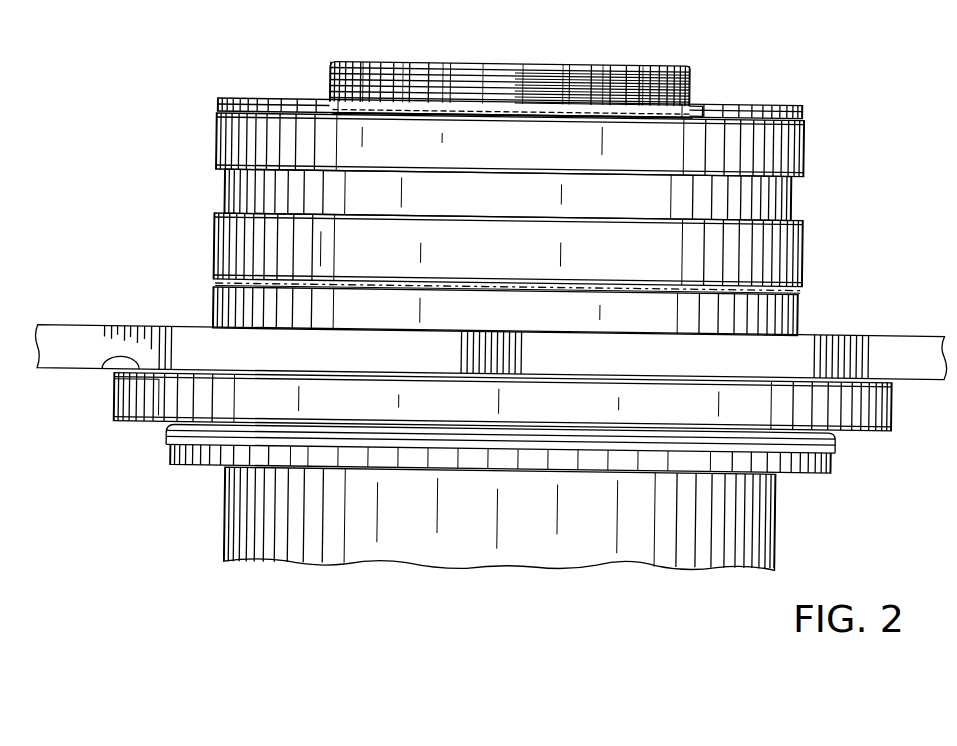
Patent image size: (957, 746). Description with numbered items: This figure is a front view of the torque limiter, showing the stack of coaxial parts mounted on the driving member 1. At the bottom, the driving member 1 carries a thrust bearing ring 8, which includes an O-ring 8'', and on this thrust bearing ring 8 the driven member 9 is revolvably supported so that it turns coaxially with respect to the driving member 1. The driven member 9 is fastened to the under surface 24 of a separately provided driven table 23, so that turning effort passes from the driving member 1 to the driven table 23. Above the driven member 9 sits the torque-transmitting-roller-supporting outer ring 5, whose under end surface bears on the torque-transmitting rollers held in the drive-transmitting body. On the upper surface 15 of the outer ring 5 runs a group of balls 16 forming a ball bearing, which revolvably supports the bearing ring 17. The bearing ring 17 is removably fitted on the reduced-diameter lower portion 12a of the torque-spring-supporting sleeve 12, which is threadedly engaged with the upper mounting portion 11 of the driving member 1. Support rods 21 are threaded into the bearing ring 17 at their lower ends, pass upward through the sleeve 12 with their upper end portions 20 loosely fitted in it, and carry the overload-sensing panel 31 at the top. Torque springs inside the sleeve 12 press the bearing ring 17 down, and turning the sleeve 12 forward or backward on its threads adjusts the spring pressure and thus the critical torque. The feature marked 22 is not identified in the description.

The driving member 1 is at (775, 530).
The torque-transmitting-roller-supporting outer ring 5 is at (800, 311).
The thrust bearing ring 8 is at (502, 480).
The O-ring 8'' is at (526, 454).
The driven member 9 is at (895, 412).
The upper mounting portion 11 is at (503, 60).
The torque-spring-supporting sleeve 12 is at (805, 150).
The reduced-diameter lower portion 12a is at (795, 192).
The upper surface 15 is at (356, 284).
The balls 16 is at (450, 284).
The bearing ring 17 is at (805, 246).
The upper end portions 20 is at (268, 108).
The support rods 21 is at (283, 110).
The lip 22 is at (104, 372).
The driven table 23 is at (885, 345).
The under surface 24 is at (160, 376).
The overload-sensing panel 31 is at (650, 113).